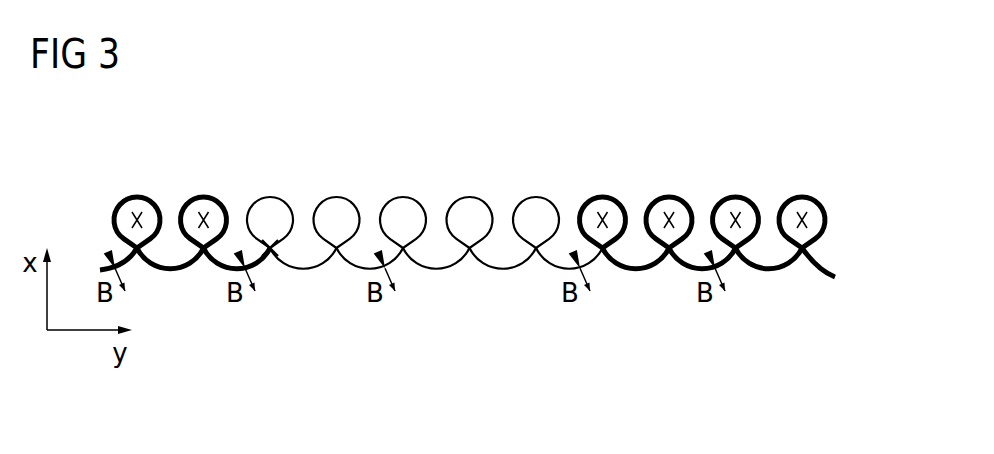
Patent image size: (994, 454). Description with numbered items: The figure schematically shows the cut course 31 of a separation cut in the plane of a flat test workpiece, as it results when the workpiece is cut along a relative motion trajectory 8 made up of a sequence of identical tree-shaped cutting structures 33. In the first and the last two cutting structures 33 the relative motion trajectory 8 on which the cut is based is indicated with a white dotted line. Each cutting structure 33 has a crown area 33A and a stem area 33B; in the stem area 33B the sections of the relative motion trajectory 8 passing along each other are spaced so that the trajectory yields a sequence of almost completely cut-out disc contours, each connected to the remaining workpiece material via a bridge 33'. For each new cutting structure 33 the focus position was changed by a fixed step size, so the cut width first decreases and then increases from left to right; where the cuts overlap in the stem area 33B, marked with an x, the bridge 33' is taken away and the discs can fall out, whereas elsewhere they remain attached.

The relative motion trajectory 8 is at (112, 207).
The cutting structure 33 is at (469, 182).
The cut course 31 is at (538, 196).
The bridge 33' is at (311, 272).
The crown area 33A is at (852, 208).
The stem area 33B is at (850, 253).